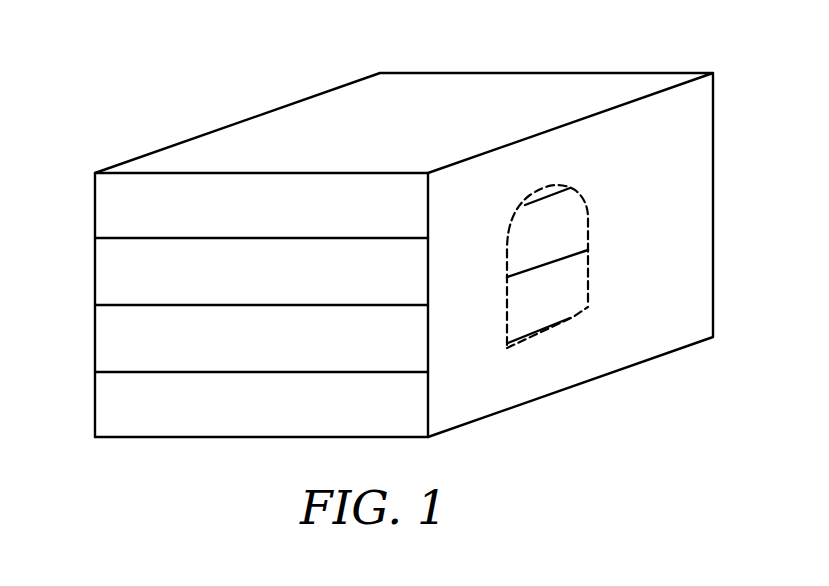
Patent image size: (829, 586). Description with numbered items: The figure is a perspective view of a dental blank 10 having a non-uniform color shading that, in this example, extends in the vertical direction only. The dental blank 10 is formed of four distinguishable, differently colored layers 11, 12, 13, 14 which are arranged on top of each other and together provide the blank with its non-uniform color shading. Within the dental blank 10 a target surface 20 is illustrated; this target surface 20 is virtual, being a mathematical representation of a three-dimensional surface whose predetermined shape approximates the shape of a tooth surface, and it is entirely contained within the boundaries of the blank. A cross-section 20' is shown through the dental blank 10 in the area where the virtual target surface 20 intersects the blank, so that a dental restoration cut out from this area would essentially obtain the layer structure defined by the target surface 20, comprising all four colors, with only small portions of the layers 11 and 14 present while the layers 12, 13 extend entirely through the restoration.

The dental blank 10 is at (222, 48).
The first layer 11 is at (115, 409).
The second layer 12 is at (115, 339).
The third layer 13 is at (115, 271).
The fourth layer 14 is at (115, 207).
The target surface 20 is at (587, 265).
The cross-section 20' is at (573, 327).